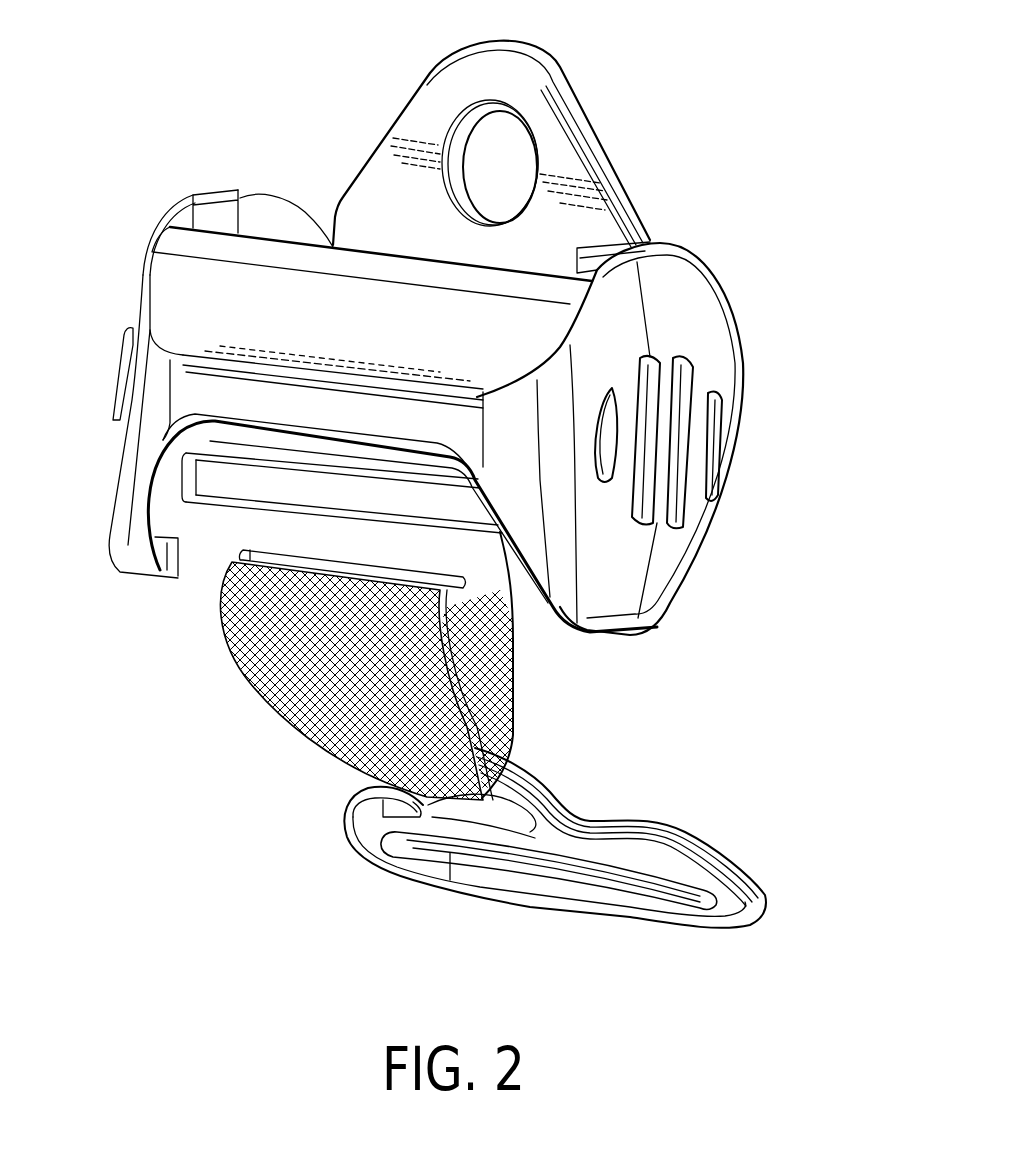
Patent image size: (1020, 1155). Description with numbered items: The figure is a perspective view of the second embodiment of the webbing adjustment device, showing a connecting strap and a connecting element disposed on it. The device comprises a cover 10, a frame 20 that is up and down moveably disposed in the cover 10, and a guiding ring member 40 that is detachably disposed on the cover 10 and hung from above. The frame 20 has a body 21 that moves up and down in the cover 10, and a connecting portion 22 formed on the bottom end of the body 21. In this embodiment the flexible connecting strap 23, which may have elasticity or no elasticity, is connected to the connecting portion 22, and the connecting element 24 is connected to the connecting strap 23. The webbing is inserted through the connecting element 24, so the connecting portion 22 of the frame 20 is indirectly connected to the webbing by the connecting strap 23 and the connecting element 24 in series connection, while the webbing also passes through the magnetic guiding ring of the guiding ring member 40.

The cover 10 is at (730, 278).
The frame 20 is at (516, 618).
The body 21 is at (175, 483).
The connecting portion 22 is at (215, 563).
The connecting strap 23 is at (337, 722).
The connecting element 24 is at (588, 907).
The guiding ring member 40 is at (586, 76).